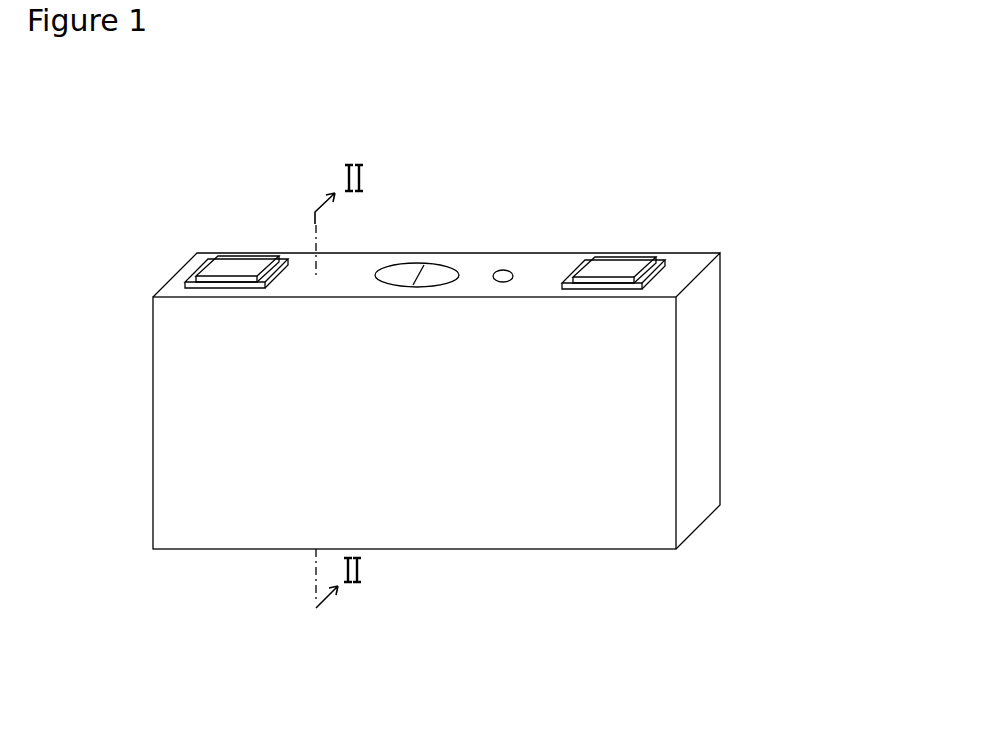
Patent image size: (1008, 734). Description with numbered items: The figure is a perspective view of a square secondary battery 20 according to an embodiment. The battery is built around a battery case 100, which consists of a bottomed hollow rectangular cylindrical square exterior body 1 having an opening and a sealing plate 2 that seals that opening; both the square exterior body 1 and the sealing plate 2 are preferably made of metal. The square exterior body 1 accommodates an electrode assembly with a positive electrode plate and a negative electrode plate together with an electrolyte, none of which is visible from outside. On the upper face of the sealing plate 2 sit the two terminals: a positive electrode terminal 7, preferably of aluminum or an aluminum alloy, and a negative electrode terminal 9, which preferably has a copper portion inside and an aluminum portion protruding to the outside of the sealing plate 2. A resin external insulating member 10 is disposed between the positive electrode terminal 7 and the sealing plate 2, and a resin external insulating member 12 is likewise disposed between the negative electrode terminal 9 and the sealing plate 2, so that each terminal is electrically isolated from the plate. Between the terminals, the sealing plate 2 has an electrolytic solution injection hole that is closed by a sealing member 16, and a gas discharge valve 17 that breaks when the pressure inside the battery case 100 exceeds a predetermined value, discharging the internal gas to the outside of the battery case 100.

The square secondary battery 20 is at (181, 124).
The battery case 100 is at (802, 163).
The square exterior body 1 is at (707, 333).
The sealing plate 2 is at (683, 263).
The positive electrode terminal 7 is at (628, 265).
The negative electrode terminal 9 is at (246, 268).
The external insulating member 10 is at (570, 277).
The external insulating member 12 is at (203, 266).
The sealing member 16 is at (508, 268).
The gas discharge valve 17 is at (430, 270).